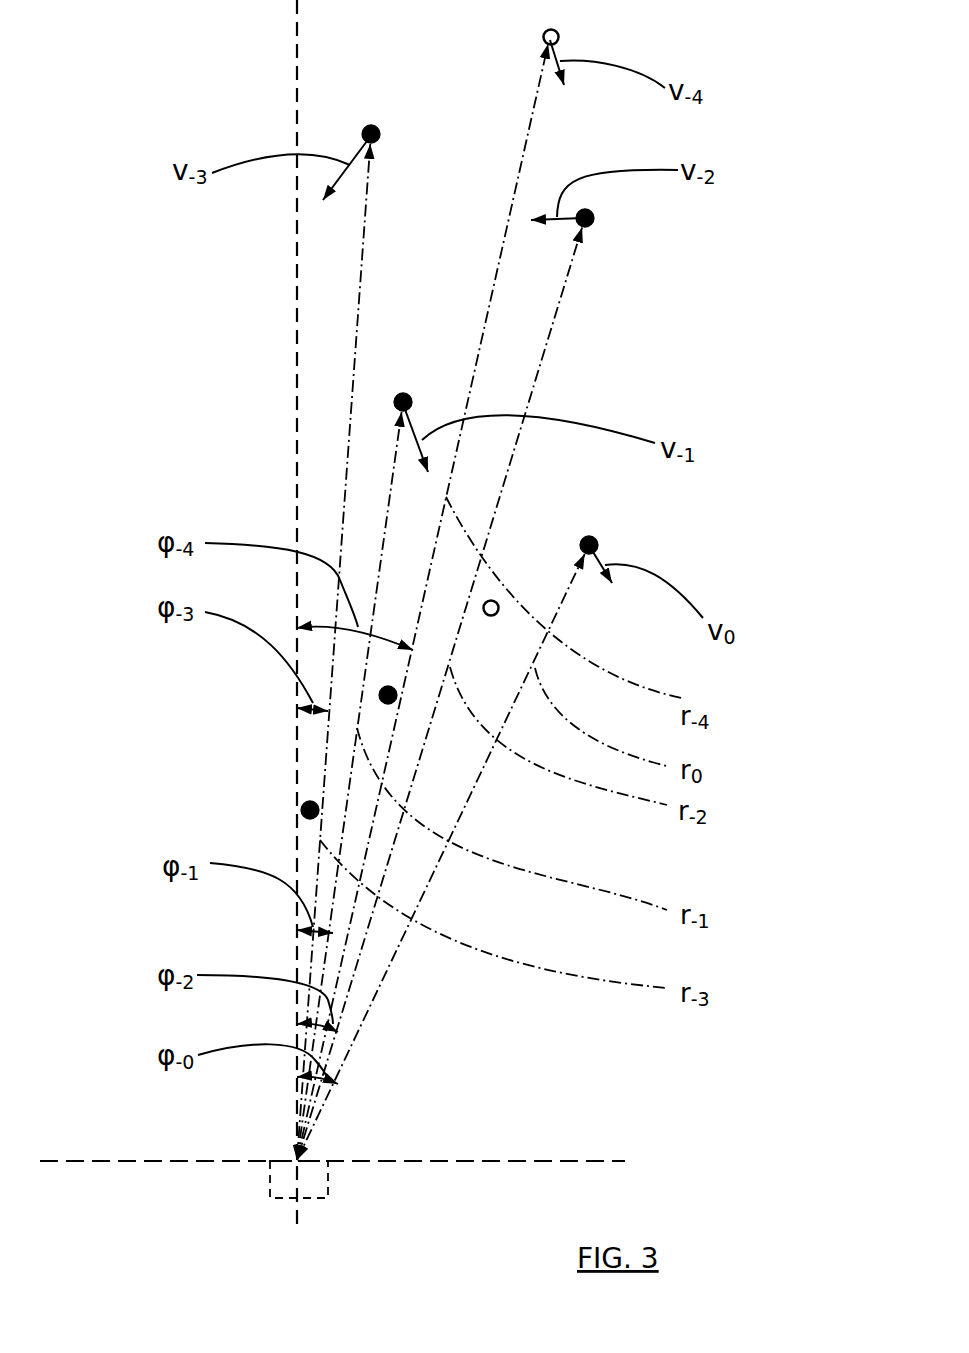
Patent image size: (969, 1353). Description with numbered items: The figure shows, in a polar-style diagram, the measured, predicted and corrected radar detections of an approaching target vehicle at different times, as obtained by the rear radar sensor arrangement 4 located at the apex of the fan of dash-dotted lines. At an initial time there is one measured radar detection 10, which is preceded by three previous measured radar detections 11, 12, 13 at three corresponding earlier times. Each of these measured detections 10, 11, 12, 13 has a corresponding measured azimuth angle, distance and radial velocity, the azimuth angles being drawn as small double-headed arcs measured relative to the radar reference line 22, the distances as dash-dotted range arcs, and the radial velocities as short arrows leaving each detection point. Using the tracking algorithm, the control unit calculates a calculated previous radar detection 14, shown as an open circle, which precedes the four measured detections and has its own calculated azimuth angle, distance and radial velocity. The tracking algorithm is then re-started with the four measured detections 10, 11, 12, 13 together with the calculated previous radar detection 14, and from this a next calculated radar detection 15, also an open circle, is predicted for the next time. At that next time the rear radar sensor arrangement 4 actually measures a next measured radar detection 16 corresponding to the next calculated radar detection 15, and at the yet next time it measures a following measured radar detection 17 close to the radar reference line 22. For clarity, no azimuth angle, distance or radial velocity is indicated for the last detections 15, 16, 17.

The rear radar sensor arrangement 4 is at (312, 1180).
The radar detection 10 is at (598, 543).
The previous radar detection 11 is at (397, 400).
The previous radar detection 12 is at (594, 219).
The previous radar detection 13 is at (364, 132).
The calculated previous radar detection 14 is at (559, 31).
The next calculated radar detection 15 is at (485, 603).
The next measured radar detection 16 is at (394, 700).
The following measured radar detection 17 is at (300, 812).
The radar reference line 22 is at (293, 273).